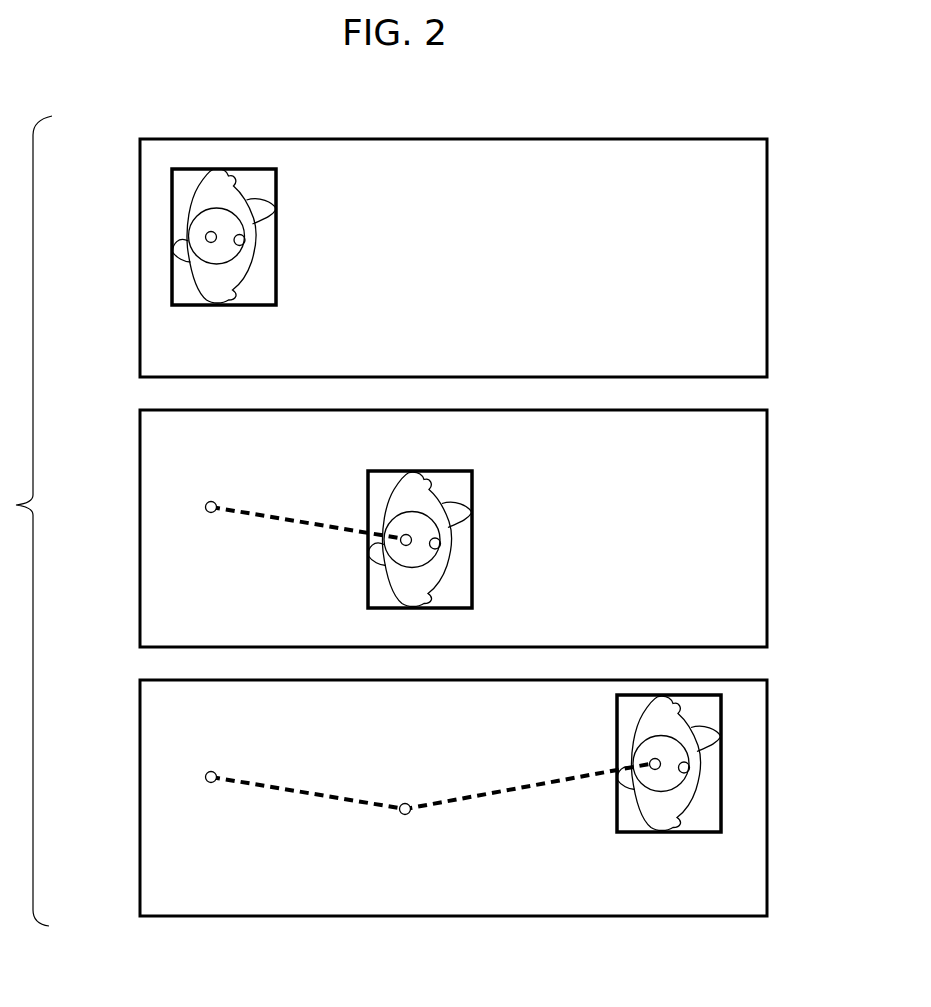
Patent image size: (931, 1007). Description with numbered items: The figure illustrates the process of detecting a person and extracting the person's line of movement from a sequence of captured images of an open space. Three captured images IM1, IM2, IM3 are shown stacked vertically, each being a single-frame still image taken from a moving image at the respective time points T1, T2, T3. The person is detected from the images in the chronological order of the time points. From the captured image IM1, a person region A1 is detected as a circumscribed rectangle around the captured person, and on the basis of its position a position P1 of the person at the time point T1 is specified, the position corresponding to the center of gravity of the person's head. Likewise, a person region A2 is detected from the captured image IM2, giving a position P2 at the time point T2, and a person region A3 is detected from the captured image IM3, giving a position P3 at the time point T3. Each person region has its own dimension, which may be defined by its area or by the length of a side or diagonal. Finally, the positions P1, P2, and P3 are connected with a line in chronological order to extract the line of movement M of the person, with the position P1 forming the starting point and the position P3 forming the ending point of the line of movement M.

The captured image IM1 is at (790, 192).
The captured image IM2 is at (790, 460).
The captured image IM3 is at (790, 730).
The person region A1 is at (276, 196).
The person region A2 is at (472, 497).
The person region A3 is at (617, 722).
The position P1 is at (216, 241).
The position P2 is at (410, 543).
The position P3 is at (650, 763).
The line of movement M is at (514, 793).
The time point T1 is at (106, 262).
The time point T2 is at (106, 530).
The time point T3 is at (106, 800).